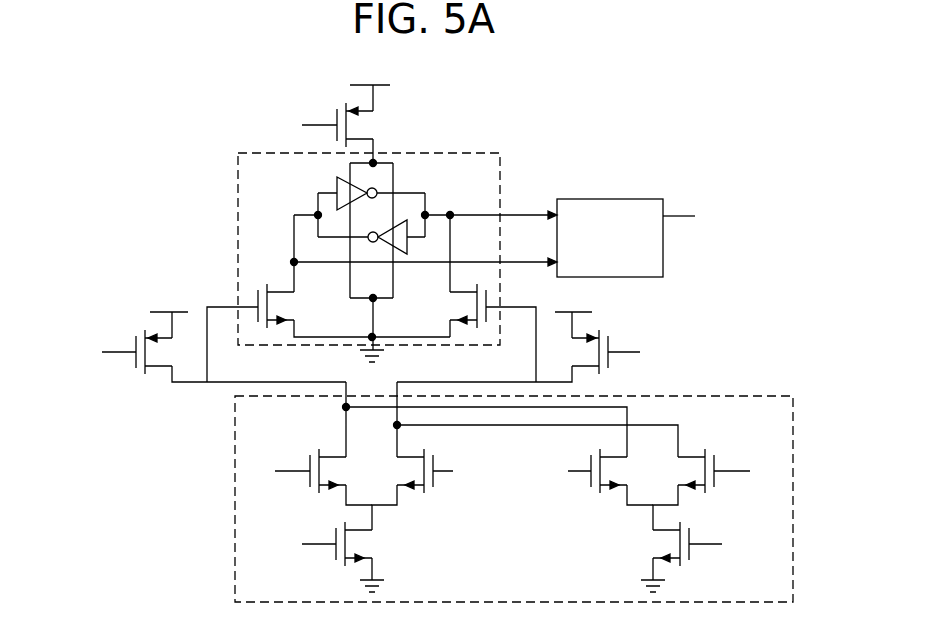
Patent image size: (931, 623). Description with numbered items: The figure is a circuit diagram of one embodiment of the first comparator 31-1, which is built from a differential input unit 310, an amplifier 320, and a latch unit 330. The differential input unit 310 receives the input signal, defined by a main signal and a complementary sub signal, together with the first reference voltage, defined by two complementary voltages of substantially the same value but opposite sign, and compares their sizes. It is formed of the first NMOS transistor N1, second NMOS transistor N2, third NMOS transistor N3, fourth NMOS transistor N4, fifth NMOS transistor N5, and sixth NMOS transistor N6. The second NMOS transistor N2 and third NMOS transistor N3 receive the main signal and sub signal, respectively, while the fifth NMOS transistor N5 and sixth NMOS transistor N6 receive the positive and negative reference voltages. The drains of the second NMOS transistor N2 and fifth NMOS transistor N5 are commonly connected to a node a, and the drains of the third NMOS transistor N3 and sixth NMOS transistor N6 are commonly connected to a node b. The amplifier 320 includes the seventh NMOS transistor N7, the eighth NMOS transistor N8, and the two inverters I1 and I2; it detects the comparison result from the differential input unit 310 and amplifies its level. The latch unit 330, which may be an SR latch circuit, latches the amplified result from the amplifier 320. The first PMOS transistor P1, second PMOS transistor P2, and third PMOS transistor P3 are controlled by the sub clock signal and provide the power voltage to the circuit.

The first comparator 31-1 is at (147, 117).
The differential input unit 310 is at (748, 396).
The amplifier 320 is at (452, 153).
The latch unit 330 is at (607, 199).
The inverter I1 is at (337, 187).
The inverter I2 is at (407, 245).
The first PMOS transistor P1 is at (199, 334).
The second PMOS transistor P2 is at (543, 334).
The third PMOS transistor P3 is at (325, 112).
The first NMOS transistor N1 is at (326, 557).
The second NMOS transistor N2 is at (307, 477).
The third NMOS transistor N3 is at (429, 489).
The fourth NMOS transistor N4 is at (699, 557).
The fifth NMOS transistor N5 is at (592, 477).
The sixth NMOS transistor N6 is at (719, 489).
The seventh NMOS transistor N7 is at (328, 333).
The eighth NMOS transistor N8 is at (481, 333).